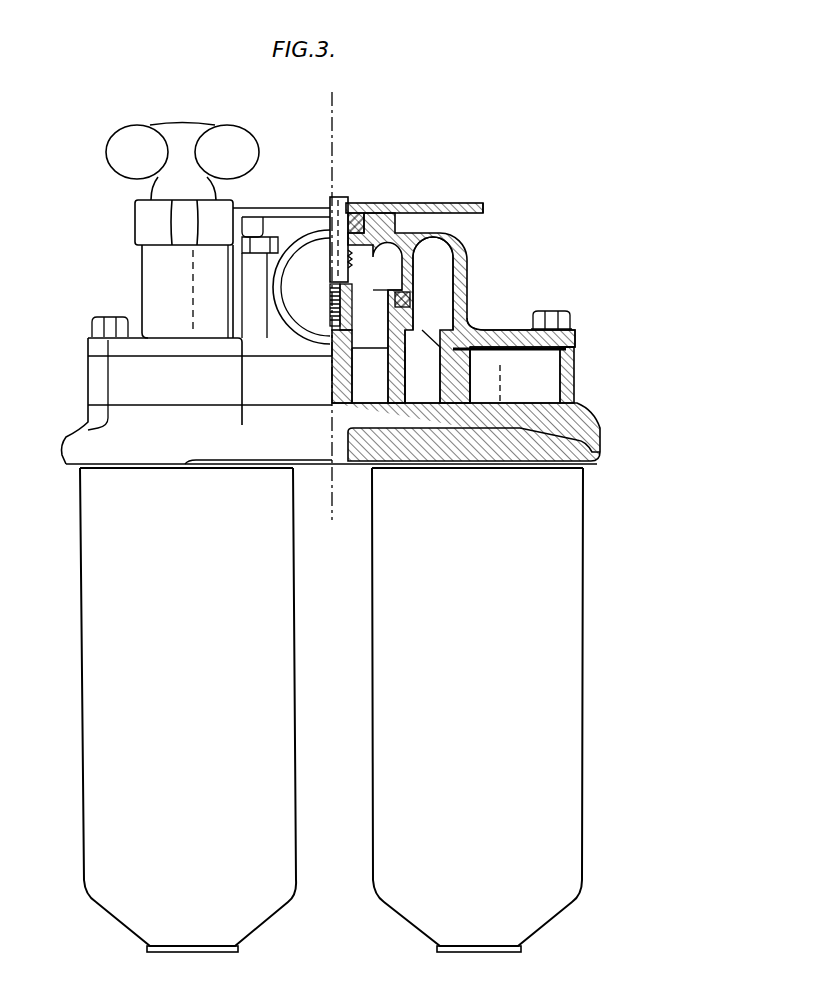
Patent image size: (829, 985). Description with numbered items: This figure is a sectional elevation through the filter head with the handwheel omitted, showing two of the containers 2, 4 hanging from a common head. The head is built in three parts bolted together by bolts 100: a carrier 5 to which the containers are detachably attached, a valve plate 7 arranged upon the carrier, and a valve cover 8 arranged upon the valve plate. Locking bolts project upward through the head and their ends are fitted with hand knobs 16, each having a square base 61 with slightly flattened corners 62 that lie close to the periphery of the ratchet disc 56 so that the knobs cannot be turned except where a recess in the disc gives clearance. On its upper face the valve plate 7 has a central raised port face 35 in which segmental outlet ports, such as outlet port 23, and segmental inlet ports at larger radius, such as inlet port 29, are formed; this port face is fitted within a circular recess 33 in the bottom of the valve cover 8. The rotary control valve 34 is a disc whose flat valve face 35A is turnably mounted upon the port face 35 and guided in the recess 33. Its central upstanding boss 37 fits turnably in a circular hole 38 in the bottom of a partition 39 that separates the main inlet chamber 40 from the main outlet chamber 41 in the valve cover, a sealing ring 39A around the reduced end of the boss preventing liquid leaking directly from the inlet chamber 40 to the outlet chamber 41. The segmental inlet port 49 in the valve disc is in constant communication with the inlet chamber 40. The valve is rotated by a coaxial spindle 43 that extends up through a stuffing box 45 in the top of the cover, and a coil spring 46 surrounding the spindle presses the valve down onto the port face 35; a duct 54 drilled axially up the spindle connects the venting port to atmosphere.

The container 2 is at (560, 577).
The container 4 is at (100, 592).
The carrier 5 is at (600, 430).
The valve plate 7 is at (575, 374).
The valve cover 8 is at (268, 223).
The hand knob 16 is at (220, 126).
The segmental outlet port 23 is at (370, 395).
The segmental inlet port 29 is at (420, 395).
The circular recess 33 is at (471, 332).
The rotary control valve 34 is at (463, 330).
The port face 35 is at (351, 350).
The valve face 35A is at (440, 349).
The upstanding boss 37 is at (395, 313).
The circular hole 38 is at (410, 298).
The partition 39 is at (440, 259).
The sealing ring 39A is at (400, 305).
The main inlet chamber 40 is at (397, 212).
The main outlet chamber 41 is at (467, 253).
The spindle 43 is at (332, 263).
The stuffing box 45 is at (360, 213).
The coil spring 46 is at (354, 260).
The segmental inlet port 49 is at (470, 362).
The duct 54 is at (335, 205).
The ratchet disc 56 is at (481, 204).
The base 61 is at (148, 227).
The flattened corners 62 is at (182, 213).
The bolts 100 is at (112, 320).